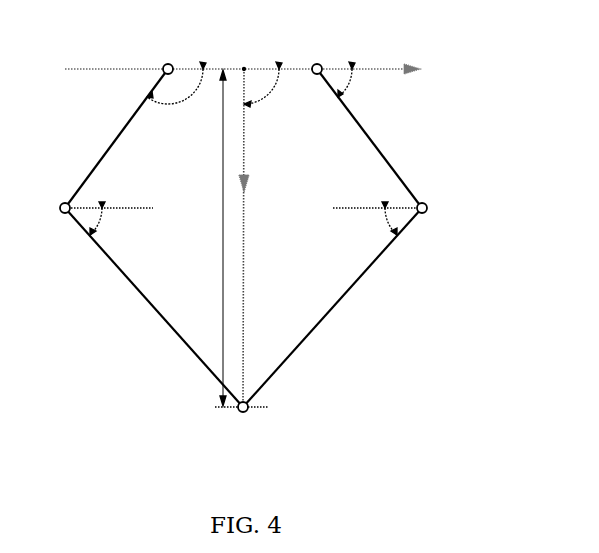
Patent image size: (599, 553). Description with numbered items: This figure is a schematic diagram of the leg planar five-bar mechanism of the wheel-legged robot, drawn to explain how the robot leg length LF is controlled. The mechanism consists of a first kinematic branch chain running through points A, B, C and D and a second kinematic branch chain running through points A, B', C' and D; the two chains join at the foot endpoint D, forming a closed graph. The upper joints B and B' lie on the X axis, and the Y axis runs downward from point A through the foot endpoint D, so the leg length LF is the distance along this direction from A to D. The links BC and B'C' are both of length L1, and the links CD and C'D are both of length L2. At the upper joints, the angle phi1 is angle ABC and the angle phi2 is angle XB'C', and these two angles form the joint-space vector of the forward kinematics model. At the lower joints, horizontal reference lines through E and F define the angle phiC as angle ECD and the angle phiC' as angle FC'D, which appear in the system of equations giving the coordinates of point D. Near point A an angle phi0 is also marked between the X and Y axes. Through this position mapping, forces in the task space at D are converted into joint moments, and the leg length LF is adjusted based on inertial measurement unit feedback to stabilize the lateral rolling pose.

The point A is at (243, 53).
The point B is at (168, 55).
The point B' is at (317, 55).
The point C is at (46, 215).
The point C' is at (441, 216).
The point D is at (244, 430).
The point E is at (125, 193).
The point F is at (368, 195).
The X axis X is at (264, 70).
The Y axis Y is at (255, 238).
The link length L1 is at (243, 138).
The link length L2 is at (243, 307).
The robot leg length LF is at (205, 238).
The angle phi0 between X axis and Y axis at A phi0 is at (267, 96).
The angle phi1 is at (362, 86).
The angle phi2 is at (176, 96).
The angle phi_c phiC is at (116, 226).
The angle phi_c' phiC' is at (369, 226).